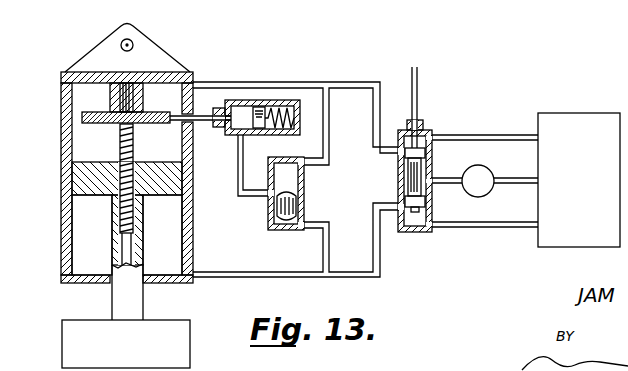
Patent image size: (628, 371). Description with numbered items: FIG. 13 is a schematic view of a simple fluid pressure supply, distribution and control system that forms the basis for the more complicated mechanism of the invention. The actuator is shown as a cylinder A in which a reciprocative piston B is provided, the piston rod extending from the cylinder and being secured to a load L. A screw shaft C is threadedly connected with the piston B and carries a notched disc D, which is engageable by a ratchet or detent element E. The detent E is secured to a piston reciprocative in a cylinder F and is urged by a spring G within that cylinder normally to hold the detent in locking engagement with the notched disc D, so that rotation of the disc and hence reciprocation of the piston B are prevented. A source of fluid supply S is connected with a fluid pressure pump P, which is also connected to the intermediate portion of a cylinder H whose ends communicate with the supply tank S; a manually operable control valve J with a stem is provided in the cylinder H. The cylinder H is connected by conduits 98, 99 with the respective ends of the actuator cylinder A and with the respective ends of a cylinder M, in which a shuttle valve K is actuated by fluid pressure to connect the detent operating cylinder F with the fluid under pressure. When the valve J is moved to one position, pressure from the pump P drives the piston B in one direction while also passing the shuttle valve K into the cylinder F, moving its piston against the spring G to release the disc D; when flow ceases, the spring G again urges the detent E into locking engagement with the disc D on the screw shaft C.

The cylinder A is at (68, 104).
The piston B is at (92, 178).
The screw shaft C is at (120, 146).
The notched disc D is at (132, 118).
The detent element E is at (200, 121).
The cylinder F is at (274, 132).
The spring G is at (300, 118).
The cylinder H is at (398, 181).
The control valve J is at (430, 172).
The shuttle valve K is at (282, 201).
The load L is at (126, 315).
The cylinder M is at (304, 180).
The fluid pressure pump P is at (485, 181).
The source of fluid supply S is at (579, 180).
The conduit 98 is at (208, 294).
The conduit 99 is at (206, 58).